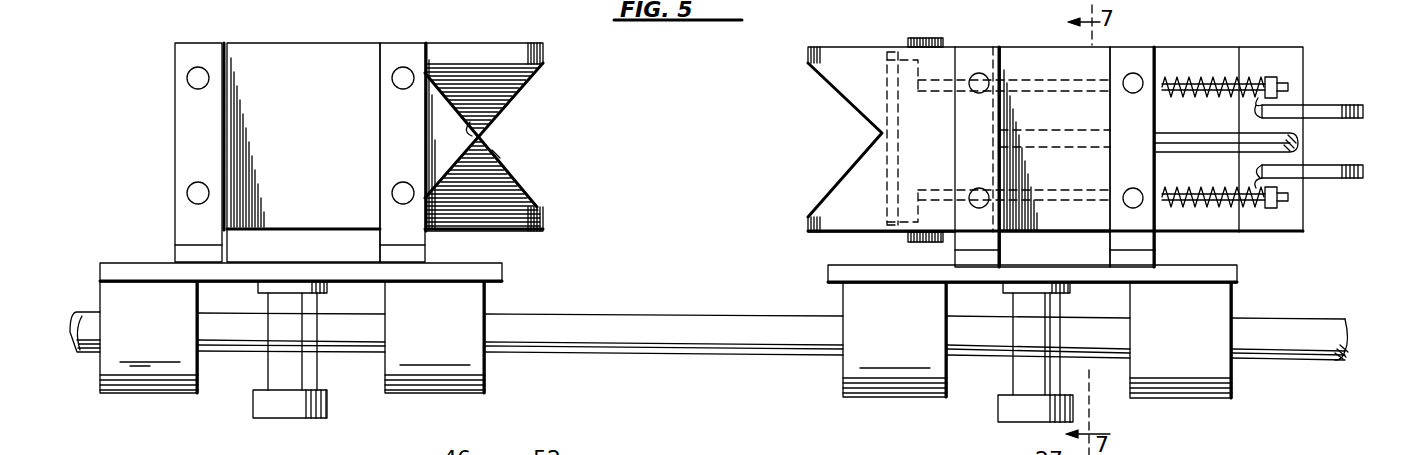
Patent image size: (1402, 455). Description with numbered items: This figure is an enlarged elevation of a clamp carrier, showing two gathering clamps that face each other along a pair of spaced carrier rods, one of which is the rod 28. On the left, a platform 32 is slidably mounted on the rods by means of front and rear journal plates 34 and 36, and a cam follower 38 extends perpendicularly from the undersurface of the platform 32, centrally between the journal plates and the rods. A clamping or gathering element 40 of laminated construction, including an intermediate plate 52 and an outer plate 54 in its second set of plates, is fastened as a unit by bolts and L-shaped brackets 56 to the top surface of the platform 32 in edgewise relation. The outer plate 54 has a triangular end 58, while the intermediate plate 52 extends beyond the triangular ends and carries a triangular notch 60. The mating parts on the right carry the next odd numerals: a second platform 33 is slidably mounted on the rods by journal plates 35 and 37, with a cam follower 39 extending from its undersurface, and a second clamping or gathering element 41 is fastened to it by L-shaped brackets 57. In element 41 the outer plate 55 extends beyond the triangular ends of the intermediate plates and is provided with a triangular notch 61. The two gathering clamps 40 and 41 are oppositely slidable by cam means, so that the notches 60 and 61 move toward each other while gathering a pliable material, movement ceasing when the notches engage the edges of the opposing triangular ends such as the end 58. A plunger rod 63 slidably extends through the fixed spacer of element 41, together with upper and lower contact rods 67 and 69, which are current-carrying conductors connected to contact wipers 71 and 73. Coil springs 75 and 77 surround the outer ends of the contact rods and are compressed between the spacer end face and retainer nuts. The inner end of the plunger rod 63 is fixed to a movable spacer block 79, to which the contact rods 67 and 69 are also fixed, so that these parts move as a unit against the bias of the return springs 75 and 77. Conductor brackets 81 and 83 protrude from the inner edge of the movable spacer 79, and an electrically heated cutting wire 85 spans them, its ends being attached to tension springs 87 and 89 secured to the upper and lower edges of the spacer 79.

The rod 28 is at (706, 336).
The platform 32 is at (150, 268).
The second platform 33 is at (1215, 268).
The front journal plate 34 is at (432, 368).
The front journal plate 35 is at (848, 365).
The rear journal plate 36 is at (112, 365).
The rear journal plate 37 is at (1198, 372).
The cam follower 38 is at (262, 408).
The cam follower 39 is at (1000, 405).
The clamping or gathering element 40 is at (330, 43).
The second clamping or gathering element 41 is at (1036, 46).
The intermediate plate 52 is at (530, 210).
The outer plate 54 is at (296, 134).
The outer plate 55 is at (830, 222).
The L-shaped bracket 56 is at (183, 218).
The L-shaped bracket 57 is at (1125, 55).
The triangular end 58 is at (472, 136).
The triangular notch 60 is at (500, 165).
The triangular notch 61 is at (850, 108).
The plunger rod 63 is at (1290, 137).
The upper contact rod 67 is at (1285, 92).
The lower contact rod 69 is at (1285, 198).
The contact wiper 71 is at (1310, 110).
The contact wiper 73 is at (1320, 172).
The coil spring 75 is at (1185, 80).
The return spring 77 is at (1175, 188).
The movable spacer block 79 is at (990, 70).
The conductor bracket 81 is at (920, 62).
The conductor bracket 83 is at (918, 205).
The electrically heated cutting wire 85 is at (890, 178).
The tension spring 87 is at (922, 38).
The tension spring 89 is at (908, 238).